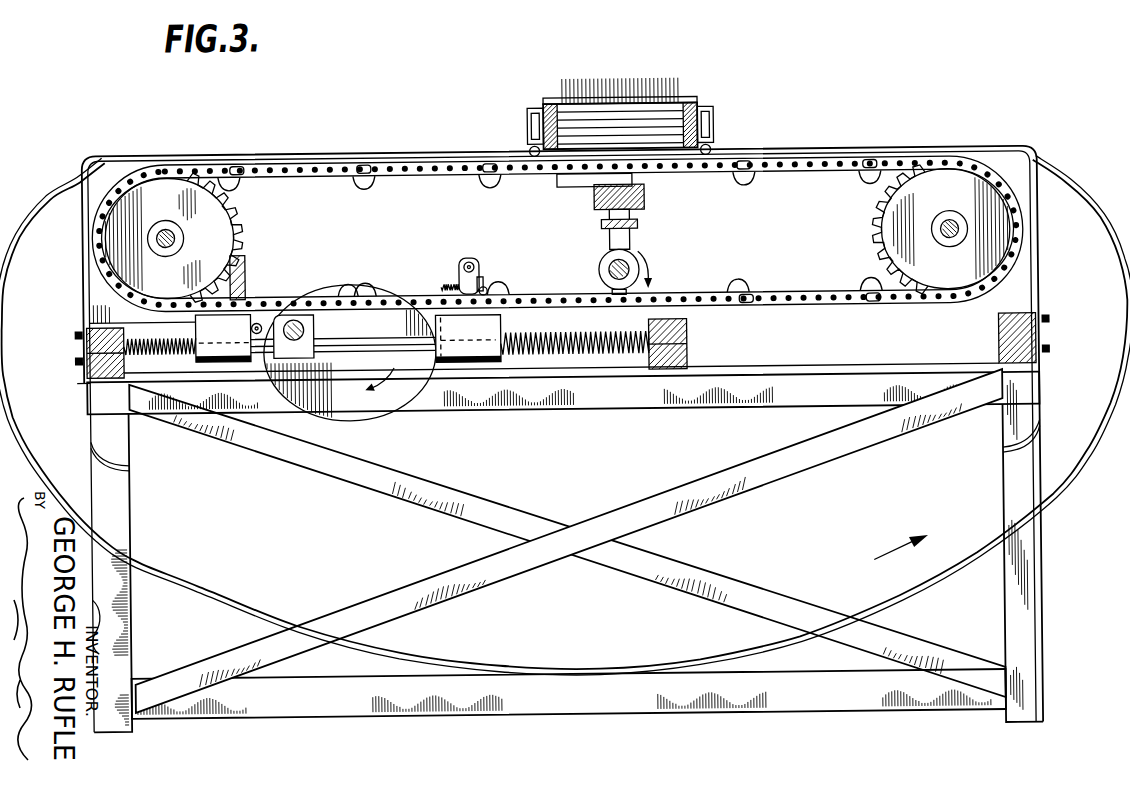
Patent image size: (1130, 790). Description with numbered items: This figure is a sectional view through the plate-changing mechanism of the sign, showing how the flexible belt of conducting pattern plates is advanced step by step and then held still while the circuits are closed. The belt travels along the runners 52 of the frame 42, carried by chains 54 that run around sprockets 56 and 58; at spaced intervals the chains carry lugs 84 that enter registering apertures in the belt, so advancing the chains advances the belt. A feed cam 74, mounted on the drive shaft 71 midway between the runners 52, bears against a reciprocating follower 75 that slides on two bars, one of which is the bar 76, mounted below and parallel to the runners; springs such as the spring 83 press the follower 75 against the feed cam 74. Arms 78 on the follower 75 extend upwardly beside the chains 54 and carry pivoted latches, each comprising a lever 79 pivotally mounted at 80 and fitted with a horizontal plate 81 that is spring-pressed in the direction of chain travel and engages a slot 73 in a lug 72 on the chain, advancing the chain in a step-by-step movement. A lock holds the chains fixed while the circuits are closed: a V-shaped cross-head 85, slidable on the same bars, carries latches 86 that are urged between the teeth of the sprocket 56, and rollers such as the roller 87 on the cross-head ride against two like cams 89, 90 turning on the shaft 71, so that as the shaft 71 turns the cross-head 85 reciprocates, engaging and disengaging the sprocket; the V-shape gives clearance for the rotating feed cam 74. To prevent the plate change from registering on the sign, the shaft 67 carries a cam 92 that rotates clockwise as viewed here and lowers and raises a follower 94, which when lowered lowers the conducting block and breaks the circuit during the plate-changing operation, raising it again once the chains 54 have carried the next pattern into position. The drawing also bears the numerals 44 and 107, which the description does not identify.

The frame 42 is at (1040, 720).
The electric motor 44 is at (664, 99).
The runner 52 is at (665, 395).
The chain 54 is at (808, 170).
The sprocket 56 is at (224, 250).
The sprocket 58 is at (900, 232).
The shaft 67 is at (640, 254).
The drive shaft 71 is at (316, 327).
The lug 72 is at (368, 182).
The slot 73 is at (348, 291).
The feed cam 74 is at (337, 396).
The reciprocating follower 75 is at (498, 327).
The bar 76 is at (368, 348).
The arm 78 is at (466, 260).
The lever 79 is at (486, 280).
The pivot 80 is at (472, 262).
The horizontal plate 81 is at (490, 289).
The spring 83 is at (610, 330).
The lug 84 is at (366, 160).
The V-shaped cross-head 85 is at (226, 366).
The latch 86 is at (250, 281).
The roller 87 is at (262, 321).
The cam 89 is at (343, 335).
The cam 90 is at (148, 350).
The cam 92 is at (605, 268).
The follower 94 is at (612, 226).
The motor mount 107 is at (528, 112).